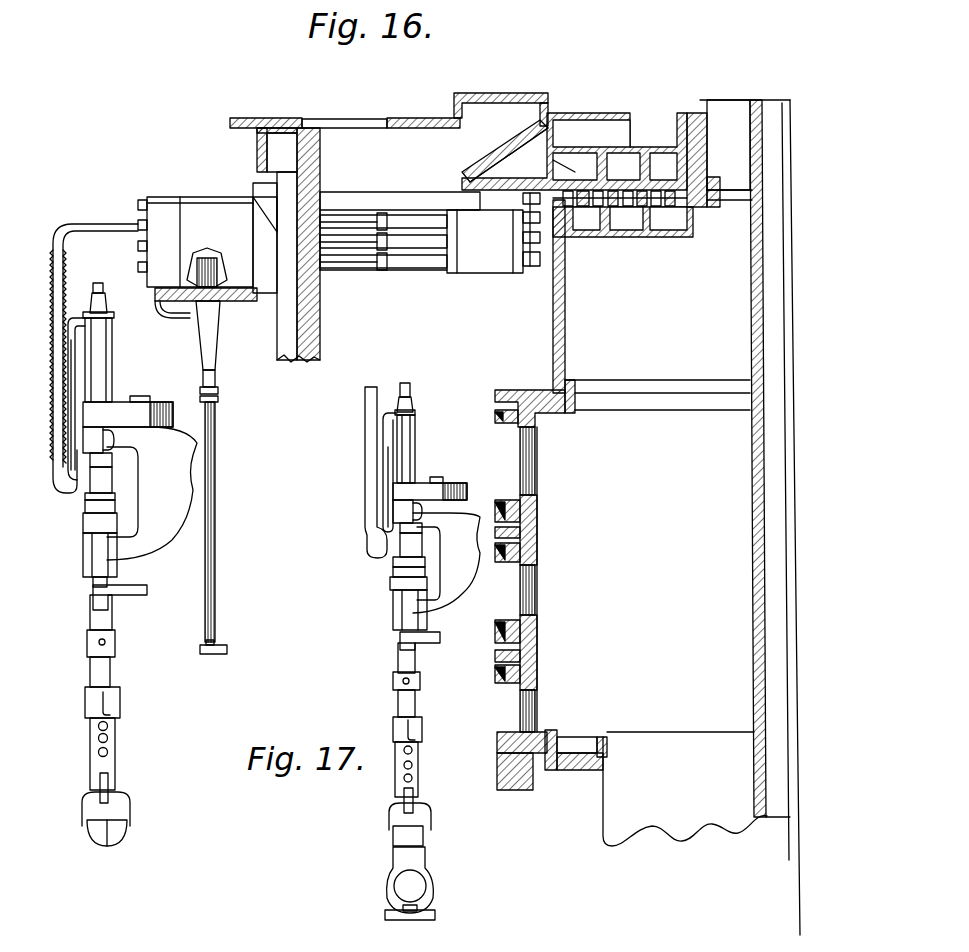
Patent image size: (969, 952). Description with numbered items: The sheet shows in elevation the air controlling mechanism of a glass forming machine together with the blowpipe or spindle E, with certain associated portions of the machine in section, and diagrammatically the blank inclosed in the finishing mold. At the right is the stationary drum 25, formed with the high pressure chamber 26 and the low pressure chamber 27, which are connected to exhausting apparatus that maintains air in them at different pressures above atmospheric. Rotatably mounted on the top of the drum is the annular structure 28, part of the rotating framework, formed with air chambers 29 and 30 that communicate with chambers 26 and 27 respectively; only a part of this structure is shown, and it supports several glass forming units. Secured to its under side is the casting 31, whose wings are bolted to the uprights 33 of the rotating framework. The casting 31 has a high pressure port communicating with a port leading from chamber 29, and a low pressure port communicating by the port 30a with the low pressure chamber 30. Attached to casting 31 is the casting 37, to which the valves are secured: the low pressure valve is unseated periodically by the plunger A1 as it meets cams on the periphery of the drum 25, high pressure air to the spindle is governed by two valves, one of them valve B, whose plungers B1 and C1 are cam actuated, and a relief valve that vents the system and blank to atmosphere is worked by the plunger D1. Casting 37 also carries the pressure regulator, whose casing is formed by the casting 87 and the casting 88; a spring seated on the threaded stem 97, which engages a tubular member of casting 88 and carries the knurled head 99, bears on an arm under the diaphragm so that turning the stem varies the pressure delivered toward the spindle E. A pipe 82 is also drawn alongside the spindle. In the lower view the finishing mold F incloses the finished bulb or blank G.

In FIG. 16, the high pressure valve B is at (404, 113).
In FIG. 16, the stationary drum 25 is at (553, 354).
In FIG. 16, the high pressure chamber 26 is at (592, 222).
In FIG. 16, the low pressure chamber 27 is at (630, 222).
In FIG. 16, the annular structure 28 is at (645, 120).
In FIG. 16, the air chamber 29 is at (548, 152).
In FIG. 16, the low pressure air chamber 30 is at (622, 165).
In FIG. 16, the port 30a is at (580, 132).
In FIG. 16, the casting 31 is at (400, 200).
In FIG. 16, the uprights 33 is at (322, 347).
In FIG. 16, the casting 37 is at (162, 191).
In FIG. 16, the pipe 82 is at (92, 222).
In FIG. 16, the casting 87 is at (203, 262).
In FIG. 16, the casting 88 is at (232, 303).
In FIG. 16, the threaded stem 97 is at (218, 563).
In FIG. 16, the knurled head 99 is at (223, 657).
In FIG. 16, the plunger A1 is at (510, 206).
In FIG. 16, the plunger B1 is at (378, 250).
In FIG. 16, the plunger C1 is at (350, 222).
In FIG. 16, the plunger D1 is at (418, 268).
In FIG. 16, the blowpipe or spindle E is at (112, 632).
In FIG. 17, the blowpipe or spindle E is at (417, 658).
In FIG. 17, the finishing mold F is at (386, 907).
In FIG. 17, the finished bulb or blank G is at (412, 883).